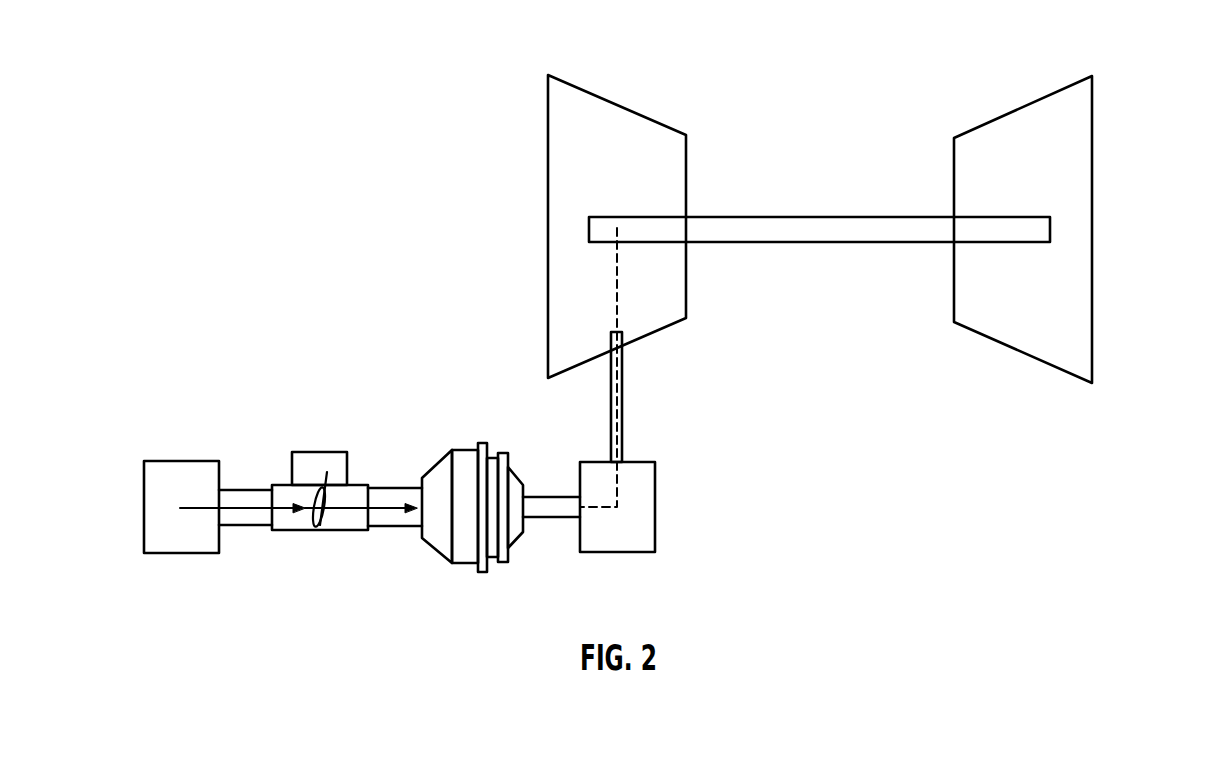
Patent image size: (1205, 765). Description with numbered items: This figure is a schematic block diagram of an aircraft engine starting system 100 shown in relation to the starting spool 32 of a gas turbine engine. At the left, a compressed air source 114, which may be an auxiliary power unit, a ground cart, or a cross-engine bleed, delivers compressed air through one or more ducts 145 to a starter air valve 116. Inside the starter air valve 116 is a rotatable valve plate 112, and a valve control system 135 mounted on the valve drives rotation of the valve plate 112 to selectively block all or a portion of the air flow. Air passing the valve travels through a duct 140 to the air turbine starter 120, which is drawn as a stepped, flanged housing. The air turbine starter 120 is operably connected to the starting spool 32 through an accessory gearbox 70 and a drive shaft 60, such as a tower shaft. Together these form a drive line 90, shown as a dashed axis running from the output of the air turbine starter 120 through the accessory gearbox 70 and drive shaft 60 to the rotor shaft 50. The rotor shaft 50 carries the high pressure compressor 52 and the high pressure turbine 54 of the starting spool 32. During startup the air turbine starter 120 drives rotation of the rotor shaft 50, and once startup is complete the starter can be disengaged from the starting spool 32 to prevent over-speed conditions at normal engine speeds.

The starting spool 32 is at (794, 158).
The rotor shaft 50 is at (820, 243).
The high pressure compressor 52 is at (548, 130).
The high pressure turbine 54 is at (1092, 132).
The drive shaft 60 is at (623, 397).
The accessory gearbox 70 is at (617, 553).
The drive line 90 is at (617, 261).
The engine starting system 100 is at (402, 388).
The valve plate 112 is at (321, 527).
The compressed air source 114 is at (182, 553).
The starter air valve 116 is at (348, 530).
The air turbine starter 120 is at (466, 450).
The valve control system 135 is at (320, 452).
The duct 140 is at (397, 487).
The ducts 145 is at (245, 526).